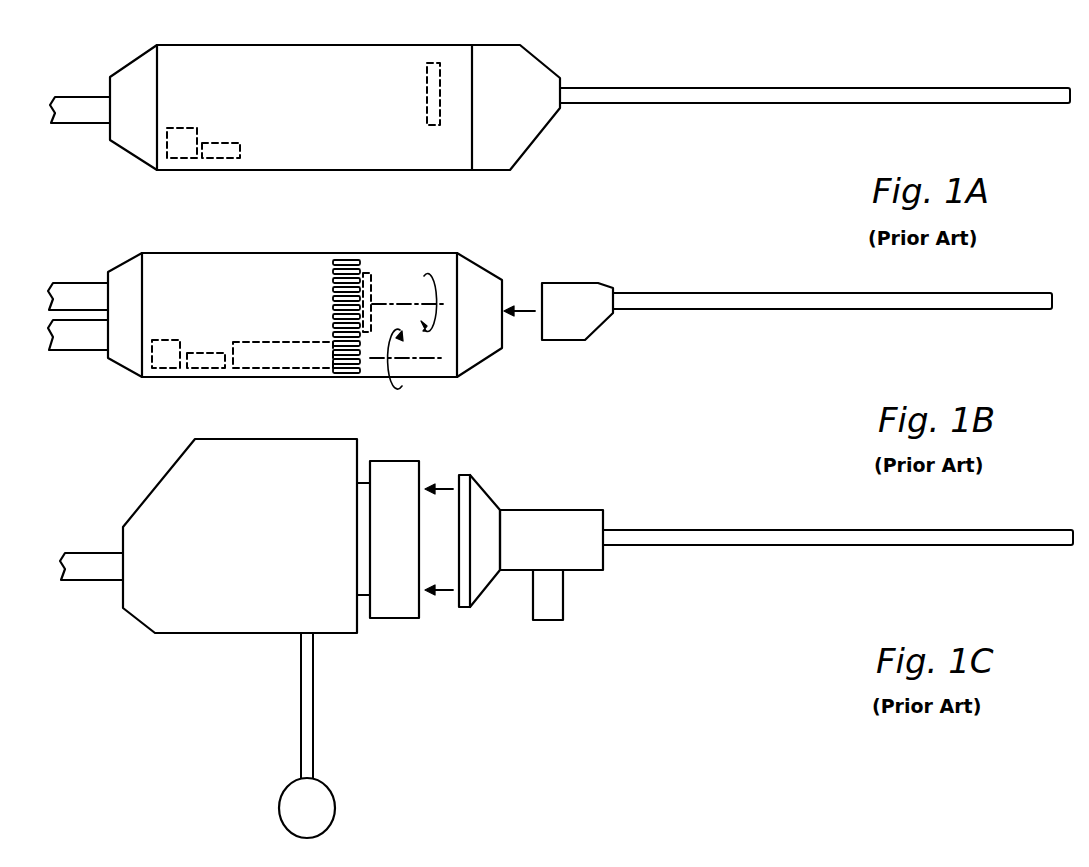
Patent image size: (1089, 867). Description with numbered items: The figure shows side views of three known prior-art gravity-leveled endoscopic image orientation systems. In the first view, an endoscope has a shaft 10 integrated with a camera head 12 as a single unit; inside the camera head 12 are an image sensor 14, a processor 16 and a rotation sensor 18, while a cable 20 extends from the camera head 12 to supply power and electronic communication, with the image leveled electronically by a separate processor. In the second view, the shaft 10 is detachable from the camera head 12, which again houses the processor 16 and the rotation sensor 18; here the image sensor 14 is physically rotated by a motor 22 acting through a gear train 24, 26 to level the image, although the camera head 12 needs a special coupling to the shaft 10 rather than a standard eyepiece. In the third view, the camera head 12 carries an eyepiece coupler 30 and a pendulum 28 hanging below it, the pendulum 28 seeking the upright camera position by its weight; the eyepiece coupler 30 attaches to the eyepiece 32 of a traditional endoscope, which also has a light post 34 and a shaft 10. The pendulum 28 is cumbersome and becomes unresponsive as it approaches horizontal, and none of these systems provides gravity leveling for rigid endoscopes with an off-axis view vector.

In FIG. 1A, the shaft 10 is at (737, 97).
In FIG. 1B, the shaft 10 is at (793, 302).
In FIG. 1C, the shaft 10 is at (755, 538).
In FIG. 1A, the camera head 12 is at (382, 50).
In FIG. 1B, the camera head 12 is at (247, 258).
In FIG. 1C, the camera head 12 is at (215, 628).
In FIG. 1A, the image sensor 14 is at (427, 113).
In FIG. 1B, the image sensor 14 is at (372, 288).
In FIG. 1A, the processor 16 is at (228, 145).
In FIG. 1B, the processor 16 is at (213, 355).
In FIG. 1A, the rotation sensor 18 is at (180, 132).
In FIG. 1B, the rotation sensor 18 is at (165, 342).
In FIG. 1A, the cable 20 is at (79, 102).
In FIG. 1B, the motor 22 is at (290, 345).
In FIG. 1B, the gear train 24 is at (352, 375).
In FIG. 1B, the gear train 26 is at (343, 262).
In FIG. 1C, the pendulum 28 is at (331, 815).
In FIG. 1C, the eyepiece coupler 30 is at (399, 620).
In FIG. 1C, the eyepiece 32 is at (487, 500).
In FIG. 1C, the light post 34 is at (553, 622).